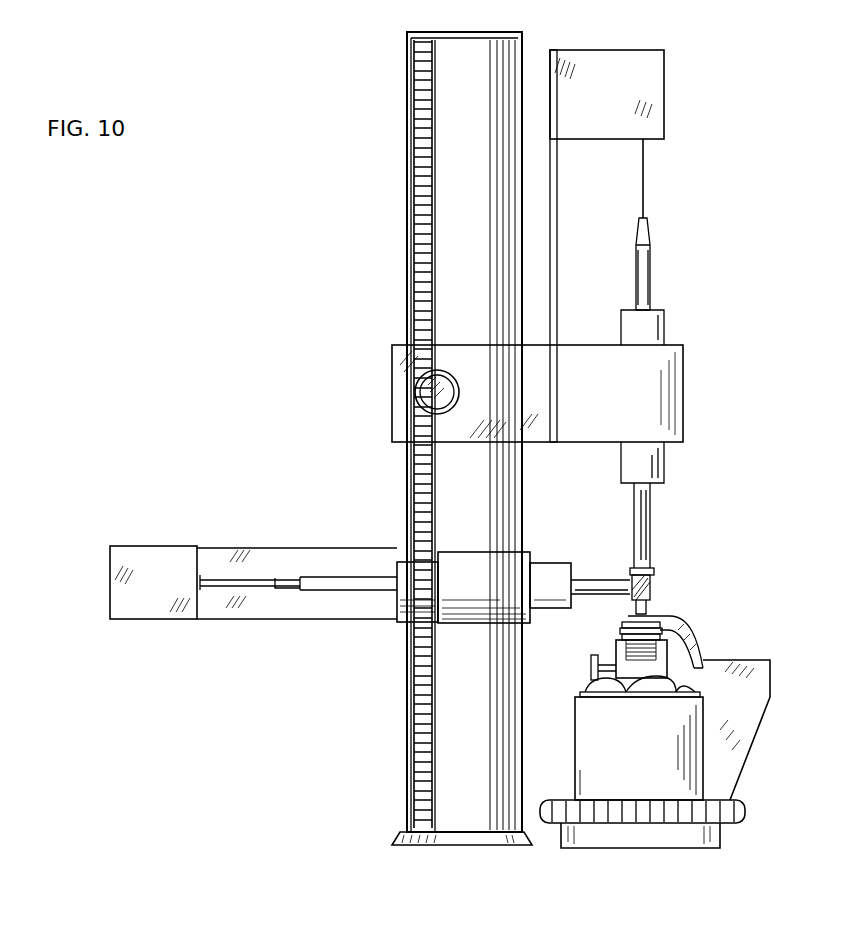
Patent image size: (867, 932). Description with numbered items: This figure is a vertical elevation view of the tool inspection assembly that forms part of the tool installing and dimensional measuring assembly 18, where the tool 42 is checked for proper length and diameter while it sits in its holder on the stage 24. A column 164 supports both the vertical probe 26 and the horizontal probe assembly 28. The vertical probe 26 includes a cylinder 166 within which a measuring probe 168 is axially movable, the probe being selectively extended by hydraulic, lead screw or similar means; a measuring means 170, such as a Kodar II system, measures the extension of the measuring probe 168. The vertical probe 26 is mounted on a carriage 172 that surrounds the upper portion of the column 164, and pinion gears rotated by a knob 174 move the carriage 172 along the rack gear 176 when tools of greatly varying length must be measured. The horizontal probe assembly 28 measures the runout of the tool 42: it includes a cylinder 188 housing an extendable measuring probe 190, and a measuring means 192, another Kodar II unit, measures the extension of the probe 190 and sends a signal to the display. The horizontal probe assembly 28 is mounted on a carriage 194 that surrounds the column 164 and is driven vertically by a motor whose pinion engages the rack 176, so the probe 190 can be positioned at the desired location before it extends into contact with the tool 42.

The tool installing and dimensional measuring assembly 18 is at (265, 287).
The sample stage assembly 24 is at (745, 625).
The vertical probe 26 is at (720, 283).
The horizontal probe assembly 28 is at (93, 490).
The tool 42 is at (655, 588).
The column 164 is at (407, 58).
The cylinder 166 is at (665, 463).
The measuring probe 168 is at (651, 538).
The measuring means 170 is at (665, 74).
The carriage 172 is at (683, 390).
The knob 174 is at (413, 392).
The rack gear 176 is at (418, 168).
The cylinder 188 is at (400, 612).
The measuring probe 190 is at (601, 578).
The measuring means 192 is at (152, 618).
The carriage 194 is at (505, 552).